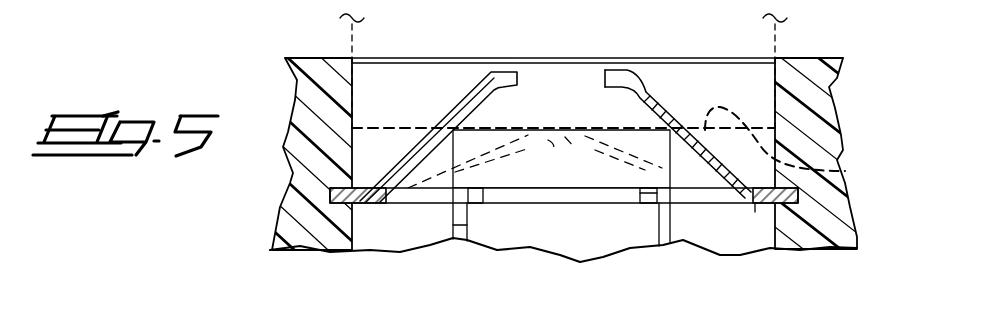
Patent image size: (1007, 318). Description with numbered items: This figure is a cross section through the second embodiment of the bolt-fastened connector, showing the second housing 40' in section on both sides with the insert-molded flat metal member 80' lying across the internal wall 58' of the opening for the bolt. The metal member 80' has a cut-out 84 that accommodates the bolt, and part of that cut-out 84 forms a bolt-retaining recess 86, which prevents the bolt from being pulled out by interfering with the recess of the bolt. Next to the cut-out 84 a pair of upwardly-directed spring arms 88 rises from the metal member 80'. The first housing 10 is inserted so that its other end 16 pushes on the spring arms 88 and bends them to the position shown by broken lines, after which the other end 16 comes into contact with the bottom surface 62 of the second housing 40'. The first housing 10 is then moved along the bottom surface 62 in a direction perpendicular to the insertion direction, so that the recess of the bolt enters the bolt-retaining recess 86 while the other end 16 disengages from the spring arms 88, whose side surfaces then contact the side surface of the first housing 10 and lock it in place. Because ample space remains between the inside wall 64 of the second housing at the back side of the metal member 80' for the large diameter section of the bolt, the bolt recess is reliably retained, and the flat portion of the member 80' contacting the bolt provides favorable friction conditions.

The first housing 10 is at (773, 43).
The other end of the first housing 16 is at (842, 170).
The second housing 40' is at (285, 153).
The internal wall of the opening for the bolt 58' is at (486, 241).
The bottom surface of the second housing 62 is at (407, 128).
The inside wall of the second housing 64 is at (656, 224).
The flat metal member 80' is at (731, 248).
The cut-out 84 is at (640, 203).
The bolt-retaining recess 86 is at (484, 190).
The spring arms 88 is at (468, 98).